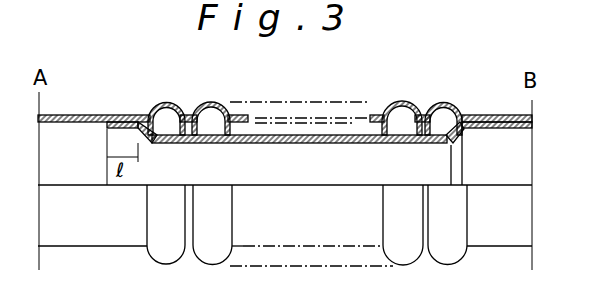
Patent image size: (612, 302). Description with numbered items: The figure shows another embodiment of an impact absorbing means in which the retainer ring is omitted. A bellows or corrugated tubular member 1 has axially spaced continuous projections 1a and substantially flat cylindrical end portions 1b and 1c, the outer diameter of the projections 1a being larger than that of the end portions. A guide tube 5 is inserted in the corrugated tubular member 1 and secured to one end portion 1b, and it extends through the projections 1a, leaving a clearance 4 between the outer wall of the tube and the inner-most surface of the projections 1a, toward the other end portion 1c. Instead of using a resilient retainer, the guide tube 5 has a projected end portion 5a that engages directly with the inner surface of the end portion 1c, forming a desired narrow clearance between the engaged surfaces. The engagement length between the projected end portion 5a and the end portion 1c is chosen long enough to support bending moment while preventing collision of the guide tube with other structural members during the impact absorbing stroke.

The corrugated tubular member 1 is at (108, 117).
The projections 1a is at (205, 102).
The end portion 1b is at (480, 115).
The end portion 1c is at (72, 115).
The clearance 4 is at (373, 128).
The guide tube 5 is at (300, 133).
The projected end portion 5a is at (108, 126).